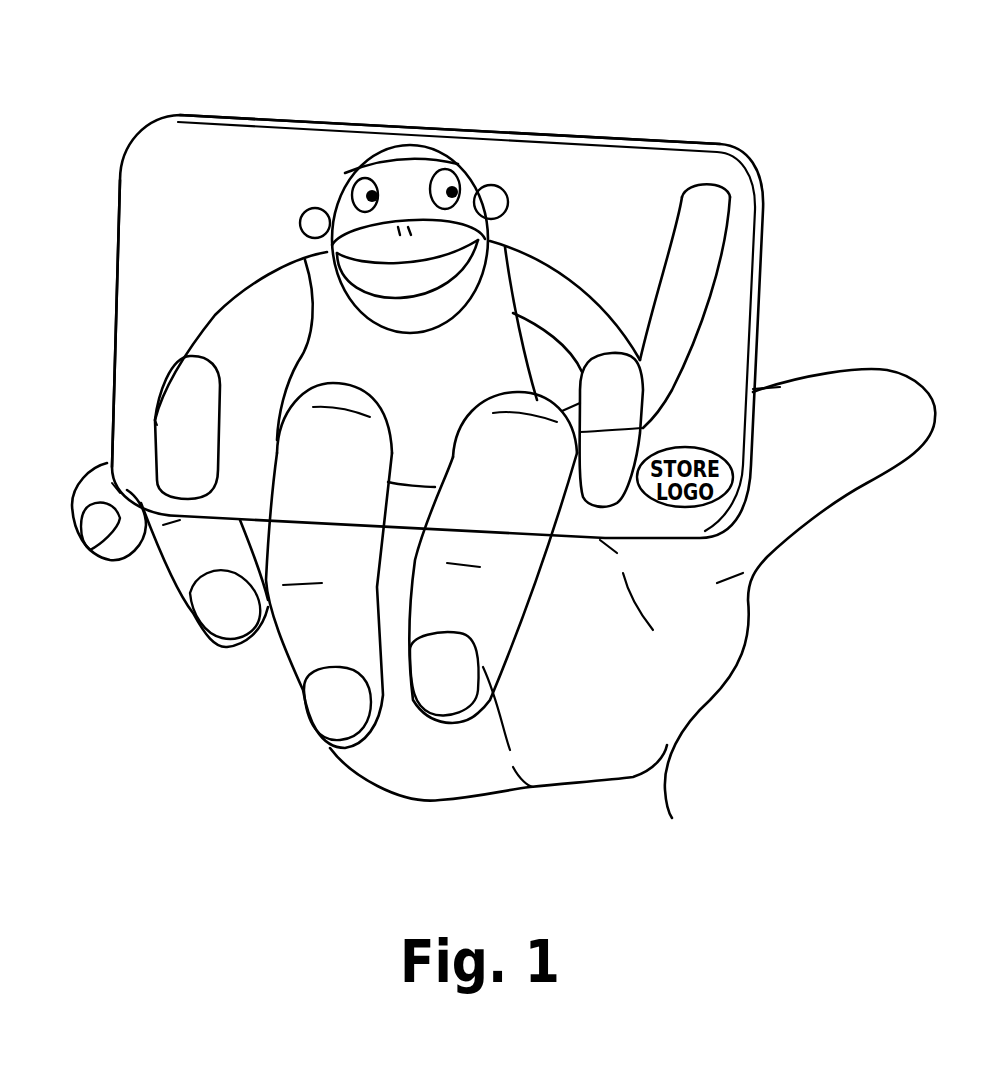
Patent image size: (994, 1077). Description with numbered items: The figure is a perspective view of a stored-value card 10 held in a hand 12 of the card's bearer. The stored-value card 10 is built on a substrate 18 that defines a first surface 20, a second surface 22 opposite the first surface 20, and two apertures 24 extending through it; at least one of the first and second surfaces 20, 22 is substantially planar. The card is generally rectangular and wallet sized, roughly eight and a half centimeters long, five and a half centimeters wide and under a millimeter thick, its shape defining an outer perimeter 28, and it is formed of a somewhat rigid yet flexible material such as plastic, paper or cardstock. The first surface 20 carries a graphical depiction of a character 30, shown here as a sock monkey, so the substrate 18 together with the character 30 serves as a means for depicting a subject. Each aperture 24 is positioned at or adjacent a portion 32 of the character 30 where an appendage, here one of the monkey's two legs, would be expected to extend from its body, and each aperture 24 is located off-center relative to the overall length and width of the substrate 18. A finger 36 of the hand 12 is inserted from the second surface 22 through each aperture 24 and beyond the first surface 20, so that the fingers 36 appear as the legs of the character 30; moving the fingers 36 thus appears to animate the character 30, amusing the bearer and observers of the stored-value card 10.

The stored-value card 10 is at (248, 78).
The hand 12 is at (386, 766).
The substrate 18 is at (592, 168).
The first surface 20 is at (150, 190).
The second surface 22 is at (374, 122).
The aperture 24 is at (330, 382).
The outer perimeter 28 is at (463, 130).
The character 30 is at (516, 238).
The portion 32 is at (425, 414).
The finger 36 is at (305, 650).